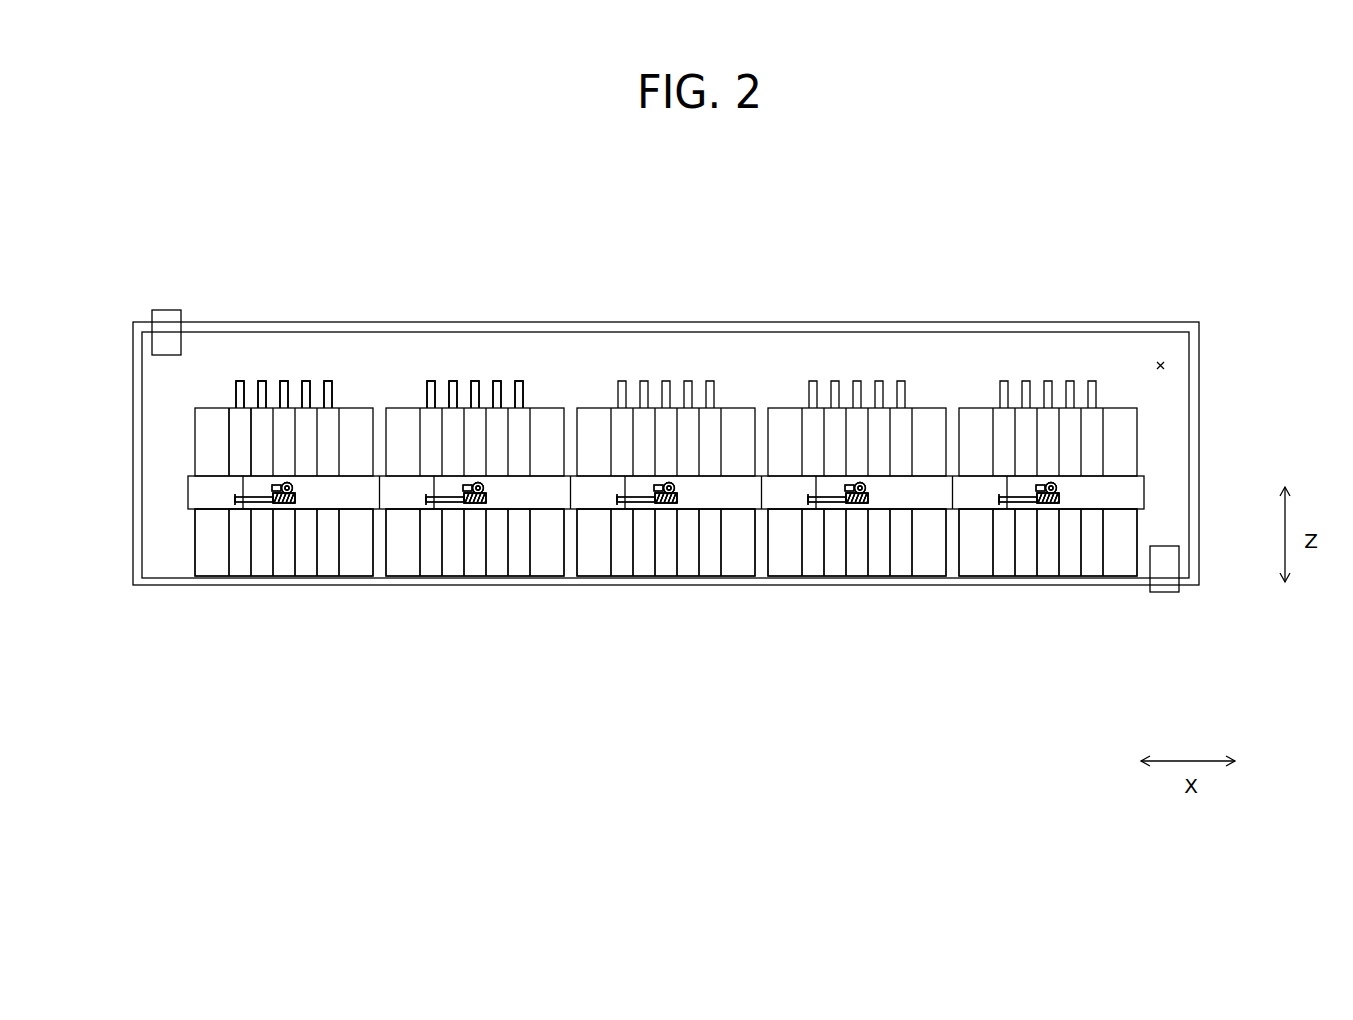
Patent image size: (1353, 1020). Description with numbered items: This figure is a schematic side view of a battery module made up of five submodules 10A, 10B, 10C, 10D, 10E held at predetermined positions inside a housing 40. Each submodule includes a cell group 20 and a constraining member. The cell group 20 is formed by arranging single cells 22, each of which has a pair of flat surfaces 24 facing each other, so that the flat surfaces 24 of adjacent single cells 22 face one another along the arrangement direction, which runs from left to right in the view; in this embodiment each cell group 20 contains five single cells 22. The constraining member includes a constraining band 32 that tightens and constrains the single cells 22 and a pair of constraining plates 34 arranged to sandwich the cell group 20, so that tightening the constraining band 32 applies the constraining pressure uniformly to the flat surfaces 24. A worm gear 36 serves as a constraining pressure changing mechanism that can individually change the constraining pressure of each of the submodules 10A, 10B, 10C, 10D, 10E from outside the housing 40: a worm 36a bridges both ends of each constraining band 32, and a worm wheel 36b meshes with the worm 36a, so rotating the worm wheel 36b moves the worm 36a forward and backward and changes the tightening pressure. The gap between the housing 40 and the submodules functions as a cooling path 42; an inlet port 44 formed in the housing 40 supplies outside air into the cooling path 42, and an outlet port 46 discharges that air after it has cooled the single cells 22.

The submodule 10A is at (358, 402).
The submodule 10B is at (559, 401).
The submodule 10C is at (732, 399).
The submodule 10D is at (925, 399).
The submodule 10E is at (1112, 399).
The cell group 20 is at (193, 255).
The single cell 22 is at (232, 407).
The flat surface 24 is at (254, 428).
The constraining band 32 is at (222, 498).
The constraining plate 34 is at (207, 570).
The worm gear 36 is at (337, 645).
The worm 36a is at (285, 505).
The worm wheel 36b is at (297, 493).
The housing 40 is at (1199, 425).
The cooling path 42 is at (1166, 365).
The inlet port 44 is at (162, 308).
The outlet port 46 is at (1160, 592).